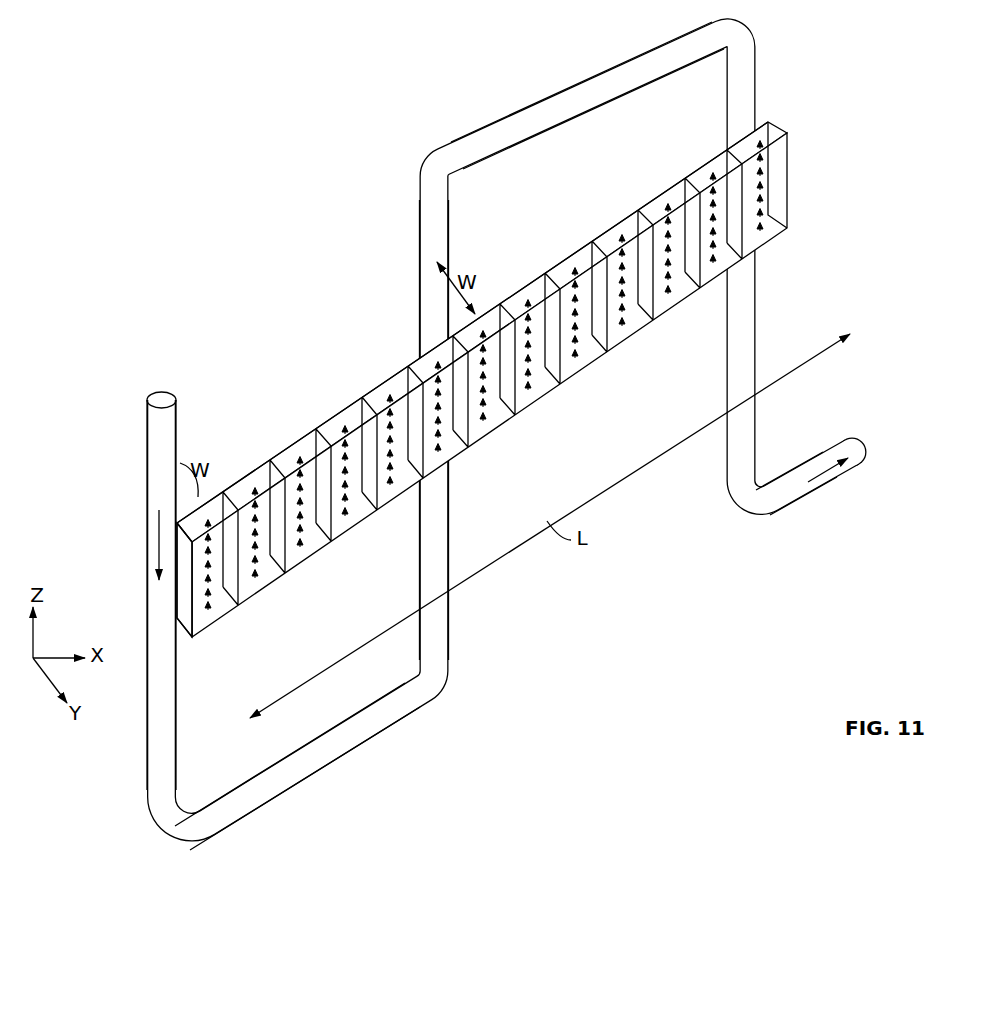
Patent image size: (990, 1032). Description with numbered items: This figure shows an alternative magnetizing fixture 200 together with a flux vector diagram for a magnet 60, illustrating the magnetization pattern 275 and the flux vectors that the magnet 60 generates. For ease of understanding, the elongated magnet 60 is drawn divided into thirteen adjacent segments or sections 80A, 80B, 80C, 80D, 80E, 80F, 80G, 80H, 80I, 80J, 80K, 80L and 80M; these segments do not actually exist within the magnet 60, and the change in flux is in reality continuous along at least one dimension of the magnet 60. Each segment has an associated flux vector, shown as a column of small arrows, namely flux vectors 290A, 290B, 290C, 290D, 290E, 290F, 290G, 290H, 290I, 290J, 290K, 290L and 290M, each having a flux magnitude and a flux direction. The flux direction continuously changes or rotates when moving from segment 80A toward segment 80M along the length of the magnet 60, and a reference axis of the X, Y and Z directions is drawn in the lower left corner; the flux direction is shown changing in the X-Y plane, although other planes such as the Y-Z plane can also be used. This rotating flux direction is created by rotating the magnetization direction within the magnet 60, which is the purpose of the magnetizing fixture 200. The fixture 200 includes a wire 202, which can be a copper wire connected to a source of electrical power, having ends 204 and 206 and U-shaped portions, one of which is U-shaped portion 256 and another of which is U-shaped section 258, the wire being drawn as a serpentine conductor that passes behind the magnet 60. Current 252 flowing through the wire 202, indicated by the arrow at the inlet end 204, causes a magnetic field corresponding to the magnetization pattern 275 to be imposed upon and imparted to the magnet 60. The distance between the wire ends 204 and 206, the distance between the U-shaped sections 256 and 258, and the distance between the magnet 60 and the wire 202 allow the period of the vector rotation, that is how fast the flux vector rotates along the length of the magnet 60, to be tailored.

The magnetizing fixture 200 is at (268, 167).
The wire 202 is at (437, 358).
The wire end 204 is at (147, 433).
The wire end 206 is at (847, 485).
The current 252 is at (157, 512).
The U-shaped portion 256 is at (392, 738).
The U-shaped section 258 is at (565, 88).
The magnetization pattern 275 is at (373, 262).
The magnet 60 is at (482, 379).
The segment 80A is at (211, 500).
The segment 80B is at (262, 465).
The segment 80C is at (305, 436).
The segment 80D is at (352, 412).
The segment 80E is at (393, 390).
The segment 80F is at (418, 367).
The segment 80G is at (488, 310).
The segment 80H is at (548, 285).
The segment 80I is at (578, 255).
The segment 80J is at (603, 240).
The segment 80K is at (670, 195).
The segment 80L is at (712, 167).
The segment 80M is at (778, 125).
The flux vector 290A is at (208, 608).
The flux vector 290B is at (256, 576).
The flux vector 290C is at (301, 546).
The flux vector 290D is at (346, 514).
The flux vector 290E is at (391, 484).
The flux vector 290F is at (440, 450).
The flux vector 290G is at (484, 420).
The flux vector 290H is at (529, 389).
The flux vector 290I is at (576, 357).
The flux vector 290J is at (623, 325).
The flux vector 290K is at (669, 293).
The flux vector 290L is at (714, 262).
The flux vector 290M is at (765, 228).